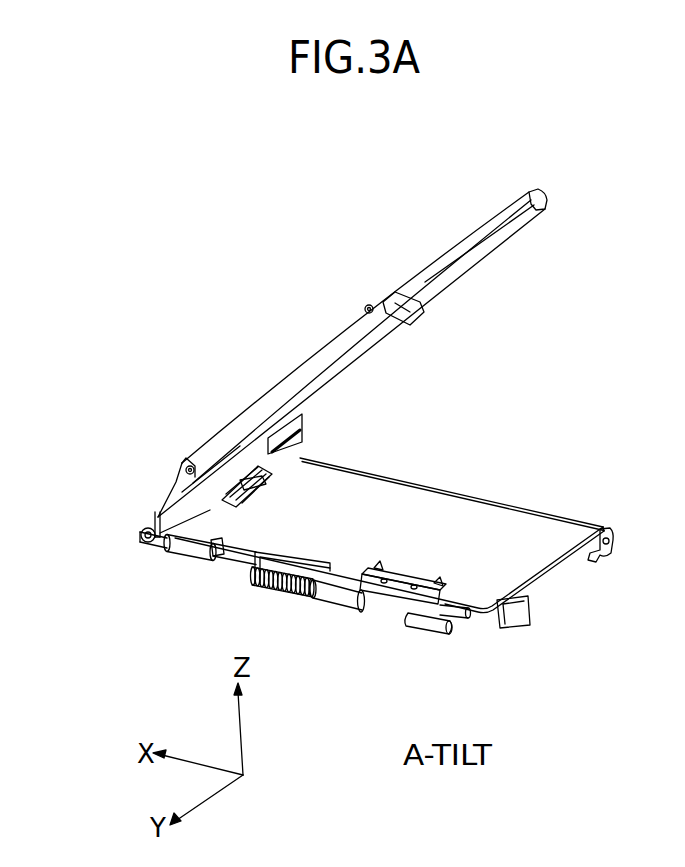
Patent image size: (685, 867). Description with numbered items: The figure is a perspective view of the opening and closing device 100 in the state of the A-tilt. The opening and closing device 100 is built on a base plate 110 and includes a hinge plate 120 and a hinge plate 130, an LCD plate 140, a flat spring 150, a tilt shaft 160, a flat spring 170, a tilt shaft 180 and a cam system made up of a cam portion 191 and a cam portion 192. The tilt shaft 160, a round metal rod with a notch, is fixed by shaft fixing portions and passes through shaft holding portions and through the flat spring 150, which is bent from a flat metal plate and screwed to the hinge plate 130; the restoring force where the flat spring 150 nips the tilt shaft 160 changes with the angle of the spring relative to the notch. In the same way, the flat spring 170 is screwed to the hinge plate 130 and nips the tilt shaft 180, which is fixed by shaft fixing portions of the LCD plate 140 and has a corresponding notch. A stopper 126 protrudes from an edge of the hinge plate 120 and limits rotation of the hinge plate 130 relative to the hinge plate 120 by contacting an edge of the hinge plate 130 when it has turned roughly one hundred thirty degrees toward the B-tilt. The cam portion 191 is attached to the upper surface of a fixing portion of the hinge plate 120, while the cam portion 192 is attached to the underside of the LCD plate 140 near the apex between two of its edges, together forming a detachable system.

The opening and closing device 100 is at (632, 172).
The base plate 110 is at (601, 565).
The hinge plate 120 is at (450, 492).
The stopper 126 is at (208, 580).
The hinge plate 130 is at (485, 568).
The LCD plate 140 is at (528, 190).
The flat spring 150 is at (380, 612).
The tilt shaft 160 is at (453, 633).
The flat spring 170 is at (243, 494).
The tilt shaft 180 is at (142, 543).
The cam portion 191 is at (522, 628).
The cam portion 192 is at (404, 318).